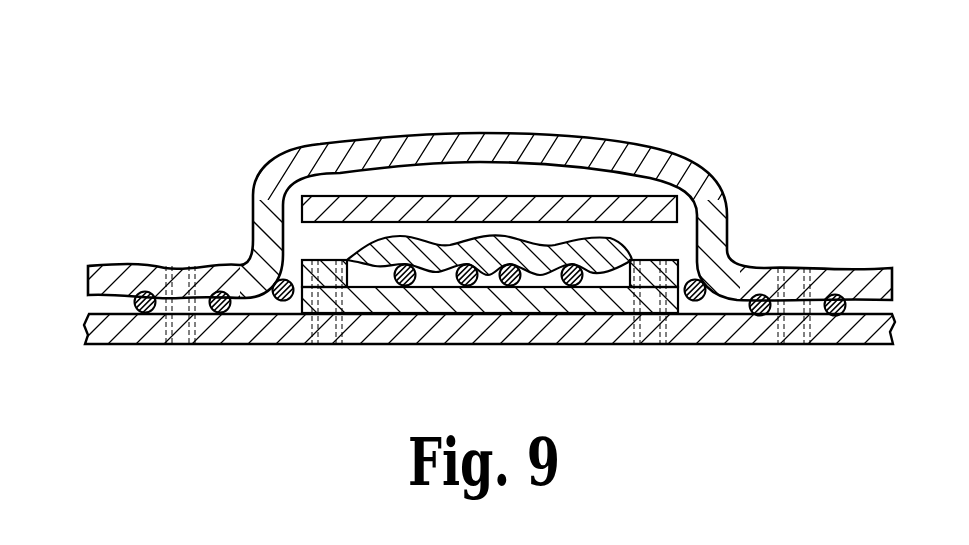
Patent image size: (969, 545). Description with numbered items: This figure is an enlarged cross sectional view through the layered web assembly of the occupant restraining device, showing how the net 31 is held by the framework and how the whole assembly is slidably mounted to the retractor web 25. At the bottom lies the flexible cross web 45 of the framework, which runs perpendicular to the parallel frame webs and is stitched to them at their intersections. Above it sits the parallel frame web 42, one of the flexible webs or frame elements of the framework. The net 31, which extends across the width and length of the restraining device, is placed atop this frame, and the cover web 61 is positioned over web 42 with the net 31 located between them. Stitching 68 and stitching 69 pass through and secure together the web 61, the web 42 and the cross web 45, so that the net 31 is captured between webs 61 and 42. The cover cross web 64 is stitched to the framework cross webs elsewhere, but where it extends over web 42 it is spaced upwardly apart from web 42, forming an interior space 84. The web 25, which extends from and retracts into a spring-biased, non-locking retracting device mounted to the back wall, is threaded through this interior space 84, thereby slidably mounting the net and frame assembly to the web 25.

The web 25 is at (505, 200).
The net 31 is at (147, 278).
The web 42 is at (680, 300).
The cross web 45 is at (127, 330).
The web 61 is at (672, 262).
The cross web 64 is at (745, 276).
The stitching 68 is at (362, 300).
The stitching 69 is at (623, 300).
The interior space 84 is at (337, 235).